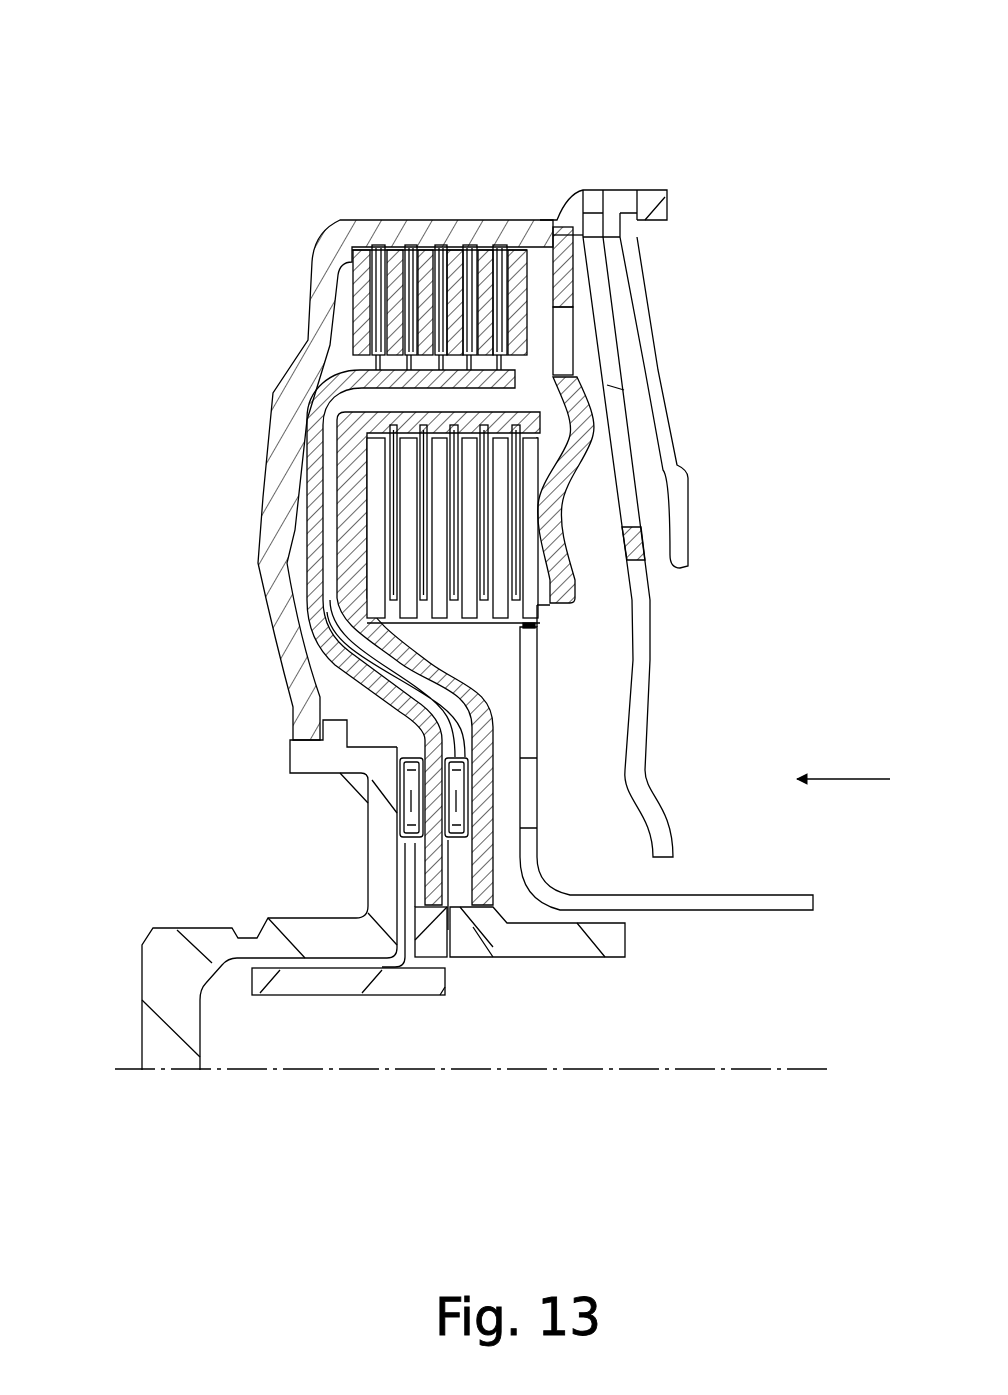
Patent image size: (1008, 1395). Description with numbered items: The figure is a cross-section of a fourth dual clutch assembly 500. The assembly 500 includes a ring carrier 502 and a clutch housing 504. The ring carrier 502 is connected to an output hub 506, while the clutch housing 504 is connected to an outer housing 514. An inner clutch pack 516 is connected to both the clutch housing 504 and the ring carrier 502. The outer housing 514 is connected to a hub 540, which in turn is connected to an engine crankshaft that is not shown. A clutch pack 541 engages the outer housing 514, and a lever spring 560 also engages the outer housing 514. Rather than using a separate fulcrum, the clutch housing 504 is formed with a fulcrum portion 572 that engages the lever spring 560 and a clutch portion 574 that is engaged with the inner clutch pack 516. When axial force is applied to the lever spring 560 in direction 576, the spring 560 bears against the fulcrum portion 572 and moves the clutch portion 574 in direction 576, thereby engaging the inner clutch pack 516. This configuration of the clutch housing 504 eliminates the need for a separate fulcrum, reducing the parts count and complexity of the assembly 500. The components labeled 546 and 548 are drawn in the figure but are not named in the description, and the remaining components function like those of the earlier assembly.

The dual clutch assembly 500 is at (145, 148).
The ring carrier 502 is at (330, 413).
The clutch housing 504 is at (577, 588).
The output hub 506 is at (557, 943).
The outer housing 514 is at (368, 226).
The inner clutch pack 516 is at (455, 638).
The hub 540 is at (168, 953).
The clutch pack 541 is at (450, 222).
The sleeve 546 is at (421, 913).
The bearing 548 is at (460, 845).
The lever spring 560 is at (667, 832).
The fulcrum portion 572 is at (599, 418).
The clutch portion 574 is at (533, 523).
The direction 576 is at (858, 779).